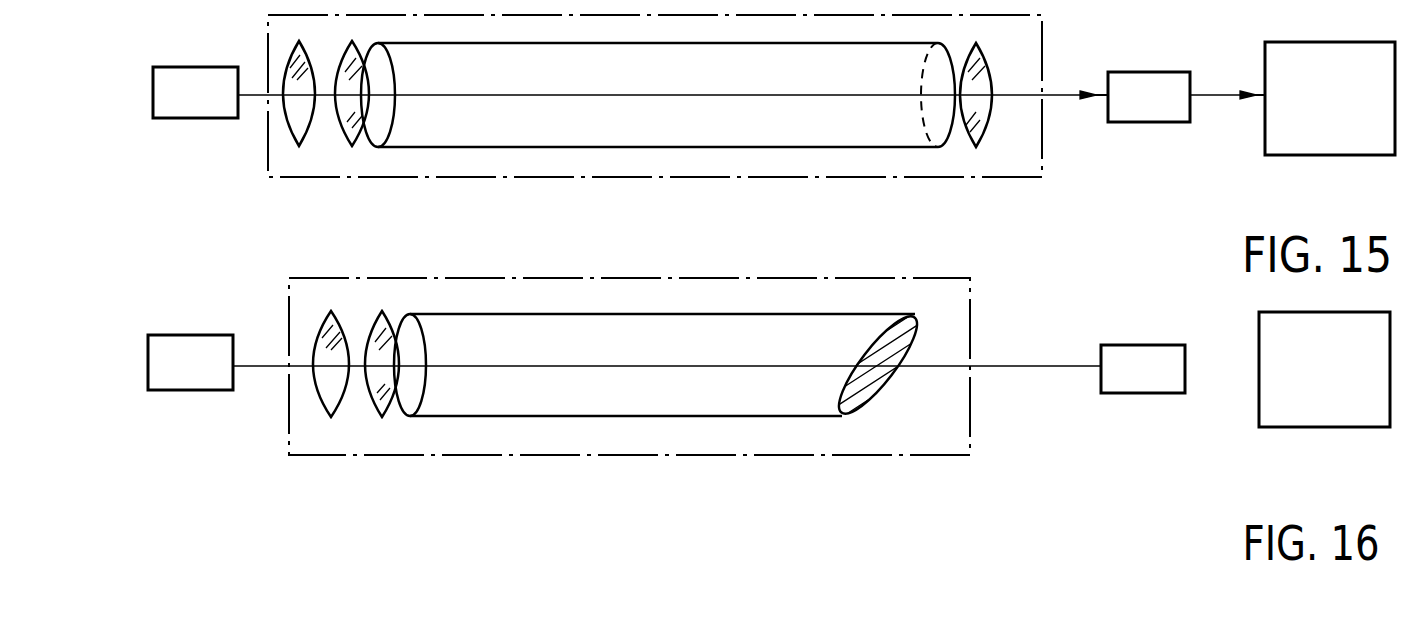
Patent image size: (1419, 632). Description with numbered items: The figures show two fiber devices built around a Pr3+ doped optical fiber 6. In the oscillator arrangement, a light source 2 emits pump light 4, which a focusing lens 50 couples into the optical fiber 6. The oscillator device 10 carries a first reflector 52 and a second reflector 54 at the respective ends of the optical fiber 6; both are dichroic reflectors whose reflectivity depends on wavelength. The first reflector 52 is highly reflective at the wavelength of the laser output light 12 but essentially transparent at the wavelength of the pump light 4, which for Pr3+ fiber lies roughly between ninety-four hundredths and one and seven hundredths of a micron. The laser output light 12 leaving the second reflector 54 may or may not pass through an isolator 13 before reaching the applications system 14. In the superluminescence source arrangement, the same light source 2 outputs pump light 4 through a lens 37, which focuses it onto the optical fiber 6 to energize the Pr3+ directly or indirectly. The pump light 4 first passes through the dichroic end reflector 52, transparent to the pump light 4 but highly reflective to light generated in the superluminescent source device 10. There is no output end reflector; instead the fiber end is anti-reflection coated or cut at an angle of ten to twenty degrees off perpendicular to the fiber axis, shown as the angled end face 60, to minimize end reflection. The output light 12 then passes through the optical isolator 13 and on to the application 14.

In FIG. 15, the light source 2 is at (173, 118).
In FIG. 16, the light source 2 is at (181, 388).
In FIG. 15, the pump light 4 is at (245, 95).
In FIG. 16, the pump light 4 is at (252, 366).
In FIG. 15, the optical fiber 6 is at (660, 147).
In FIG. 15, the oscillator device 10 is at (805, 177).
In FIG. 16, the oscillator device 10 is at (890, 455).
In FIG. 15, the laser output light 12 is at (1067, 95).
In FIG. 16, the laser output light 12 is at (1036, 366).
In FIG. 15, the isolator 13 is at (1143, 80).
In FIG. 16, the isolator 13 is at (1141, 345).
In FIG. 15, the applications system 14 is at (1309, 140).
In FIG. 16, the applications system 14 is at (1284, 427).
In FIG. 16, the lens 37 is at (328, 412).
In FIG. 15, the focusing lens 50 is at (296, 140).
In FIG. 15, the first reflector 52 is at (351, 140).
In FIG. 16, the first reflector 52 is at (383, 412).
In FIG. 15, the second reflector 54 is at (979, 145).
In FIG. 16, the slanted end face 60 is at (878, 387).